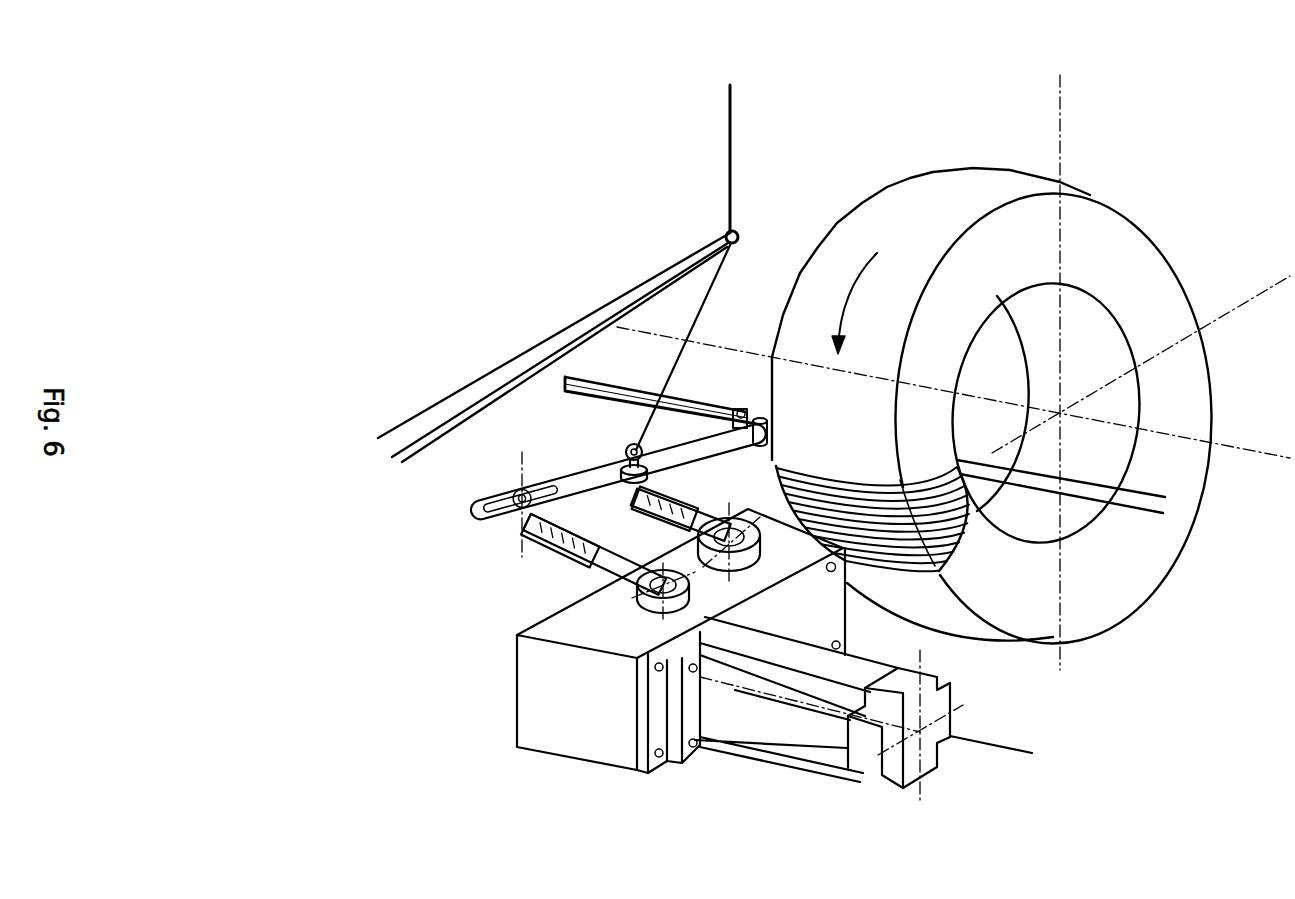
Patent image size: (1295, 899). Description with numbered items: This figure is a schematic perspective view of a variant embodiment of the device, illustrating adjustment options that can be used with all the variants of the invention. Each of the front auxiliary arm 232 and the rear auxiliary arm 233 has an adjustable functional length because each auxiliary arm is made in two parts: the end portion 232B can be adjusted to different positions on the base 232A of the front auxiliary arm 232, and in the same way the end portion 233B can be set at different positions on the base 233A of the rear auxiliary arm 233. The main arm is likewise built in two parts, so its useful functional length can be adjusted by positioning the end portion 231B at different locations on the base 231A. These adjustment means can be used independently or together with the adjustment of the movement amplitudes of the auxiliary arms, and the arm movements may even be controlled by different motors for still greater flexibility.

The base of the main arm 231A is at (577, 487).
The end portion of the main arm 231B is at (760, 478).
The front auxiliary arm 232 is at (783, 550).
The base of the front auxiliary arm 232A is at (633, 597).
The end portion of the front auxiliary arm 232B is at (668, 497).
The rear auxiliary arm 233 is at (414, 596).
The base of the rear auxiliary arm 233A is at (576, 551).
The end portion of the rear auxiliary arm 233B is at (522, 520).